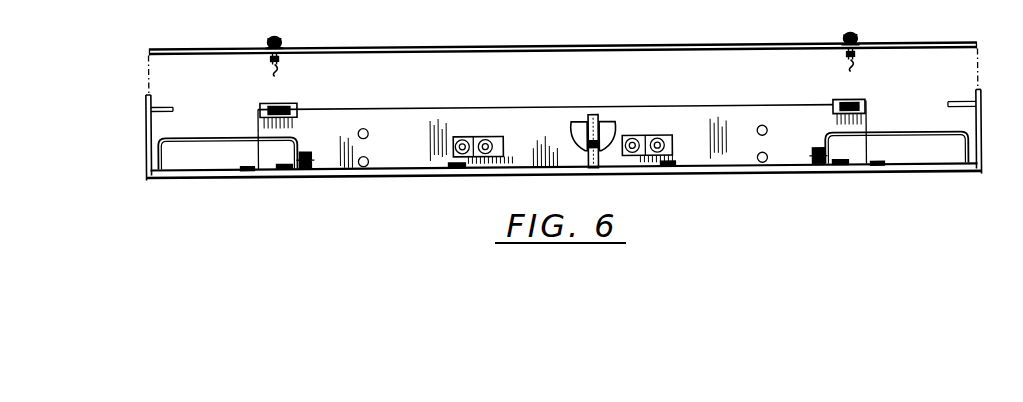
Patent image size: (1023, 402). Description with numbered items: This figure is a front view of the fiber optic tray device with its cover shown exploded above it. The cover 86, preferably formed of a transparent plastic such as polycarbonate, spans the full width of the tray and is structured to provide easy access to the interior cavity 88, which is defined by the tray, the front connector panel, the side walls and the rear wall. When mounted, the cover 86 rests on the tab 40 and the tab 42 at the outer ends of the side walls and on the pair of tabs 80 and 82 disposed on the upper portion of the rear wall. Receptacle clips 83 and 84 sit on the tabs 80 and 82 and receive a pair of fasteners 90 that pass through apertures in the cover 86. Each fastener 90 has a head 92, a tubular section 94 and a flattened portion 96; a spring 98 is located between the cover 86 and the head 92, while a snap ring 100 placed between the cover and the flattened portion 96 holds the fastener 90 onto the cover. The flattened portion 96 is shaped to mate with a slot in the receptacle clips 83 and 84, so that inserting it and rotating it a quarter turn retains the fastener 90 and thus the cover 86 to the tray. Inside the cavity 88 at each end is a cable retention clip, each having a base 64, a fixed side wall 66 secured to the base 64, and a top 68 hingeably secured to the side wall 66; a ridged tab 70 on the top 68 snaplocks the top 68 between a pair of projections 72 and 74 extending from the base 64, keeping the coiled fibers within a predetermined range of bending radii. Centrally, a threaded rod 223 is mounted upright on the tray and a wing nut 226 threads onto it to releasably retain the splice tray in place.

The tab 40 is at (967, 103).
The tab 42 is at (157, 108).
The base 64 is at (217, 172).
The fixed side wall 66 is at (167, 152).
The top 68 is at (228, 134).
The ridged tab 70 is at (300, 150).
The projection 72 is at (283, 165).
The projection 74 is at (303, 160).
The tab 80 is at (833, 105).
The tab 82 is at (265, 102).
The receptacle clip 83 is at (860, 105).
The receptacle clip 84 is at (293, 105).
The cover 86 is at (650, 44).
The interior cavity 88 is at (397, 142).
The fastener 90 is at (268, 30).
The head 92 is at (280, 35).
The tubular section 94 is at (280, 61).
The flattened portion 96 is at (273, 70).
The spring 98 is at (268, 40).
The snap ring 100 is at (273, 60).
The threaded rod 223 is at (590, 120).
The wing nut 226 is at (613, 128).